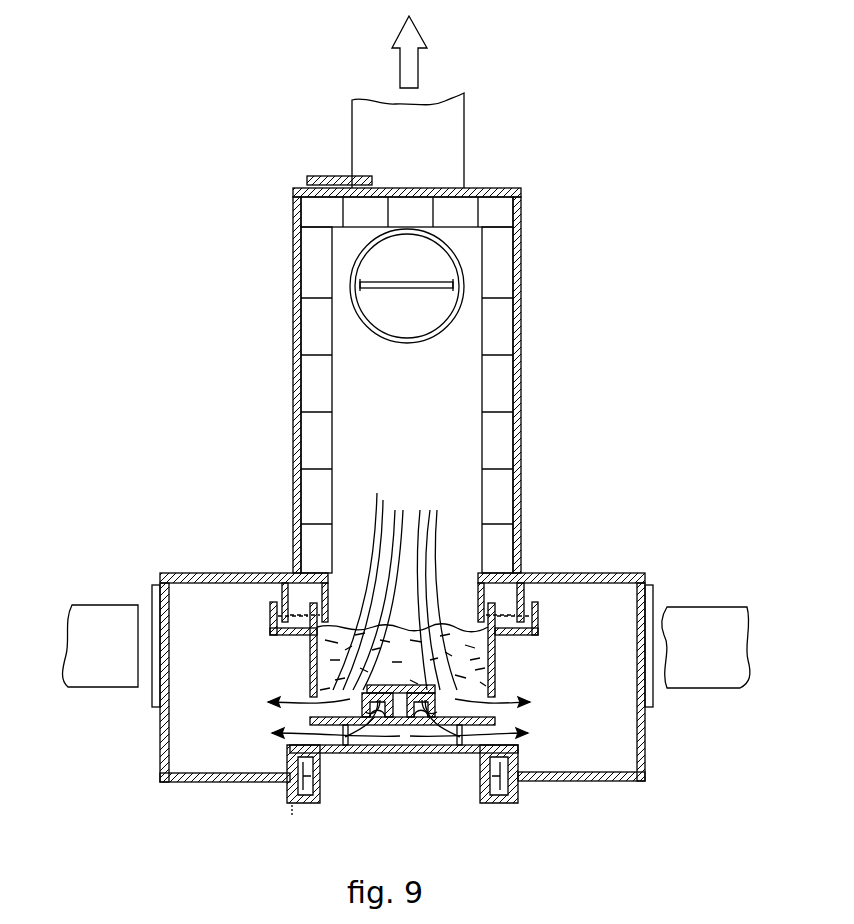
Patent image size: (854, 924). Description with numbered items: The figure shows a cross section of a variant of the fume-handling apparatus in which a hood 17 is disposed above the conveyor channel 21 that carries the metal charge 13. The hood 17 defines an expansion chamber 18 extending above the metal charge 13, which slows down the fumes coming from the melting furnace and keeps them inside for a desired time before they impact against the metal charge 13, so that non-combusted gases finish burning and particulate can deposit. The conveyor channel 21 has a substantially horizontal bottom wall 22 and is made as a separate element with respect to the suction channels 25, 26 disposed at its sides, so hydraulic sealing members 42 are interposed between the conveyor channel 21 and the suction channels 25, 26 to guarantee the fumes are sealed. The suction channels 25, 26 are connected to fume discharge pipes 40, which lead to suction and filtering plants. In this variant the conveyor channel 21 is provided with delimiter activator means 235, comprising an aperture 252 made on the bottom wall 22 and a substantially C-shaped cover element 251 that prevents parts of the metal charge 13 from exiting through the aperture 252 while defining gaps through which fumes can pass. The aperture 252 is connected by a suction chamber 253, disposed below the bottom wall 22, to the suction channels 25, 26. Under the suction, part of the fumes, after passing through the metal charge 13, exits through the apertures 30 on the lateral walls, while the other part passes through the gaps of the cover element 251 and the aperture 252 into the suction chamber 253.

The metal charge 13 is at (457, 642).
The hood 17 is at (284, 436).
The expansion chamber 18 is at (476, 373).
The conveyor channel 21 is at (447, 770).
The bottom wall 22 is at (357, 753).
The suction channel 25 is at (218, 782).
The suction channel 26 is at (602, 781).
The apertures 30 is at (310, 693).
The fume discharge pipe 40 is at (447, 135).
The sealing members 42 is at (273, 575).
The delimiter activator means 235 is at (386, 674).
The cover element 251 is at (424, 714).
The aperture 252 is at (398, 735).
The suction chamber 253 is at (380, 753).